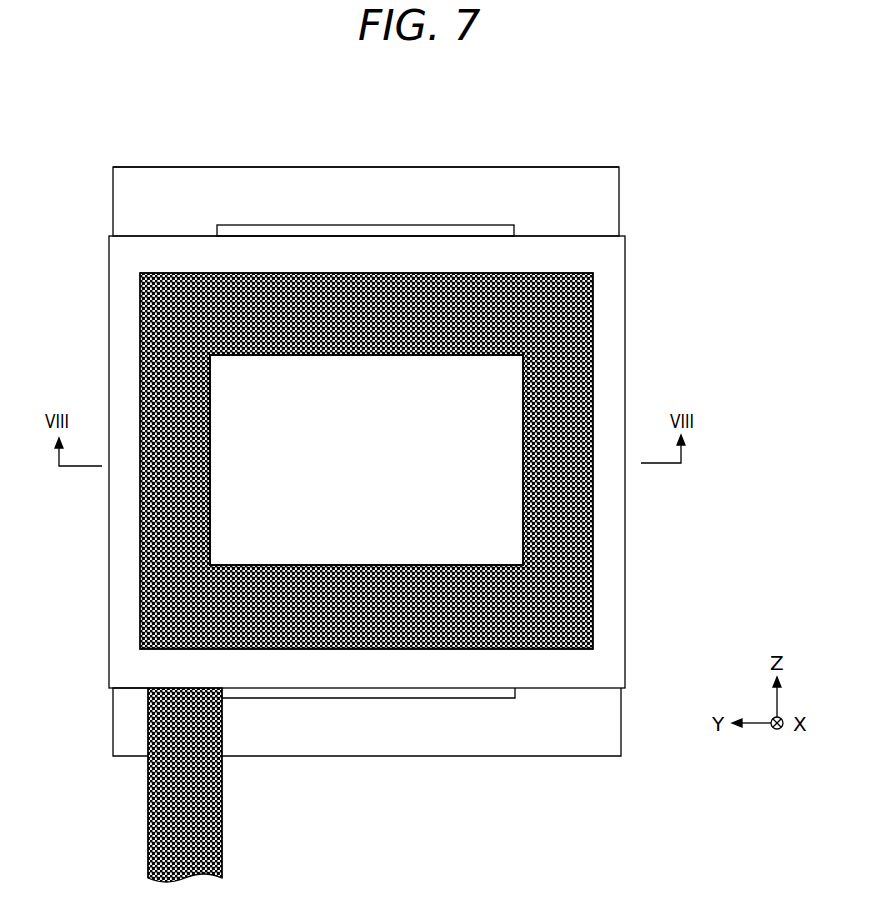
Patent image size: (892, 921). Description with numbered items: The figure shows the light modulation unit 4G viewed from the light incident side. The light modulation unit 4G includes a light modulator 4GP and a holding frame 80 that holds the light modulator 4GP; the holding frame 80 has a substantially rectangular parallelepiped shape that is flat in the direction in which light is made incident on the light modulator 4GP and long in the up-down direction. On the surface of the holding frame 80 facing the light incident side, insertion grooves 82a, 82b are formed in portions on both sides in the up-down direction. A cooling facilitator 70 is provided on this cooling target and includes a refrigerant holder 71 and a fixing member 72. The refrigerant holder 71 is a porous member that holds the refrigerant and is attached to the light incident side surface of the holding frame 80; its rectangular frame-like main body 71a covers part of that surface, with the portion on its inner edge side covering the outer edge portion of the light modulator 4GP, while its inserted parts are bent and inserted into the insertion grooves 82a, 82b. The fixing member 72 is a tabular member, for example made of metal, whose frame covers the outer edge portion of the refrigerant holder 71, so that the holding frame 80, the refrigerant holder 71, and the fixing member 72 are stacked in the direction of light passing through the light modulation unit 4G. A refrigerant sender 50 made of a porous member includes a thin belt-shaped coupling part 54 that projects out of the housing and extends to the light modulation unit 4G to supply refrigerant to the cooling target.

The cooling facilitator 70 is at (615, 806).
The refrigerant holder 71 is at (548, 660).
The main body 71a is at (580, 585).
The fixing member 72 is at (605, 698).
The holding frame 80 is at (158, 188).
The insertion groove 82a is at (394, 236).
The insertion groove 82b is at (395, 688).
The light modulation unit 4G is at (580, 160).
The light modulator 4GP is at (507, 506).
The refrigerant sender 50 is at (138, 793).
The coupling part 54 is at (222, 812).